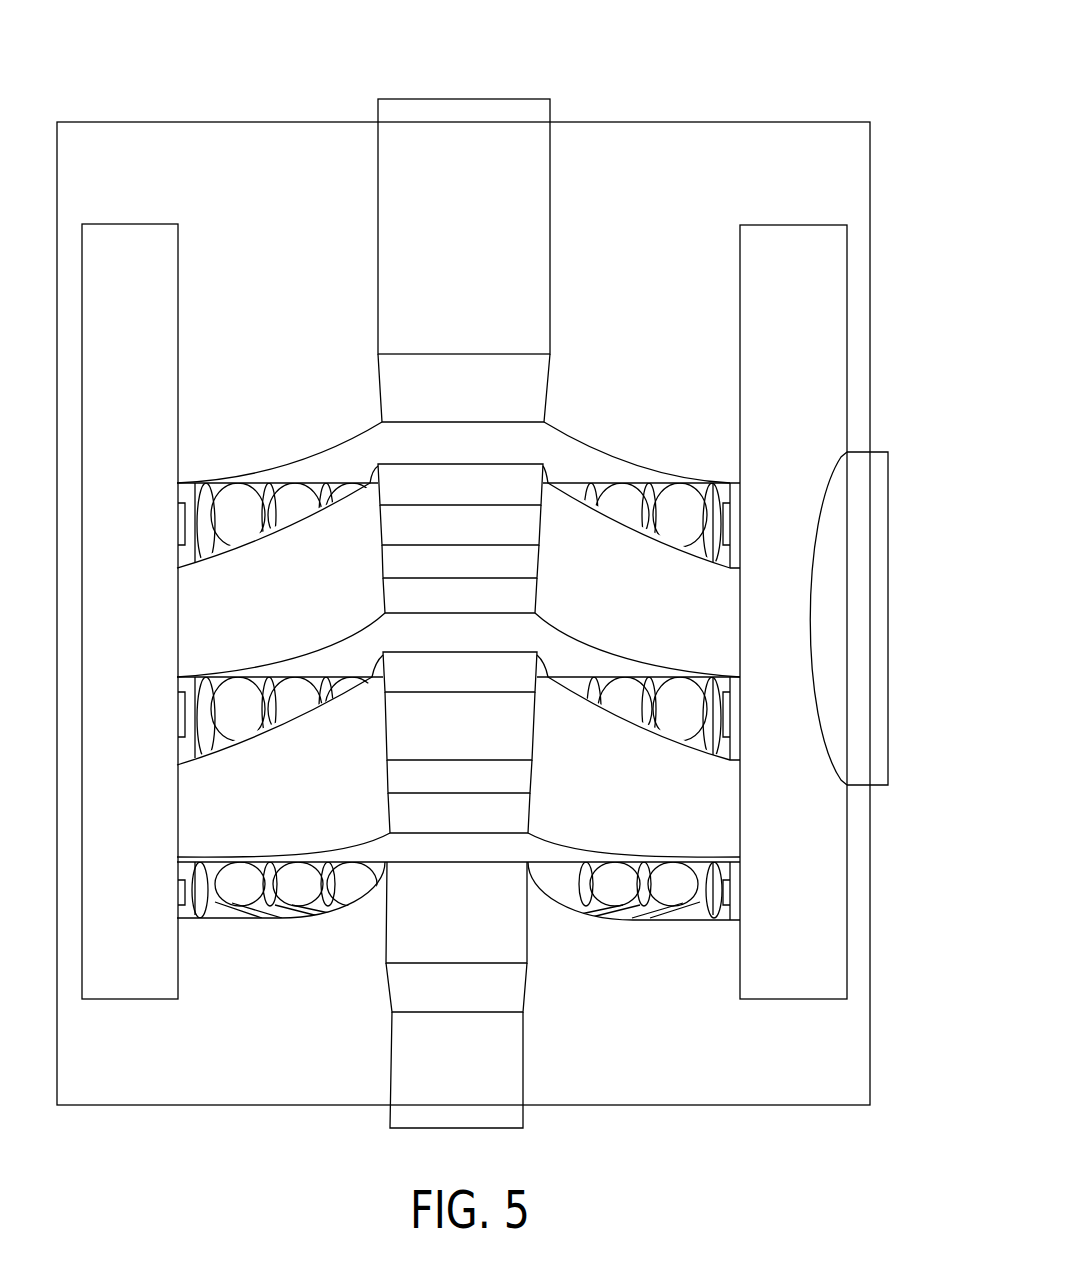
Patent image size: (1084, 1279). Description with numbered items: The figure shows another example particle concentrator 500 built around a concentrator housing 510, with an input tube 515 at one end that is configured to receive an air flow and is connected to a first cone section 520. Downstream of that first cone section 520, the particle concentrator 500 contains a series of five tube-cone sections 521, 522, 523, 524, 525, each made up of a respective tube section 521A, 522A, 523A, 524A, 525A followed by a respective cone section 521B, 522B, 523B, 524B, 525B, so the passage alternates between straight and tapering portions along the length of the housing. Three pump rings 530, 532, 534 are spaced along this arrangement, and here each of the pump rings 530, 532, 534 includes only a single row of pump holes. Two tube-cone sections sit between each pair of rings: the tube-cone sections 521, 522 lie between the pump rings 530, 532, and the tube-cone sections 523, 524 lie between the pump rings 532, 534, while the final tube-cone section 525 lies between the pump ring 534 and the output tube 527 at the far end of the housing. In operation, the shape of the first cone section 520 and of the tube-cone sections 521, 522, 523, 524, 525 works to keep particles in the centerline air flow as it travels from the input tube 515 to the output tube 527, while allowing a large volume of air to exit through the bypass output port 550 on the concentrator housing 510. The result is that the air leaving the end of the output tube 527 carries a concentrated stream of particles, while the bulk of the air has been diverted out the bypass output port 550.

The particle concentrator 500 is at (244, 70).
The concentrator housing 510 is at (340, 121).
The input tube 515 is at (538, 197).
The first cone section 520 is at (538, 383).
The tube-cone section 521 is at (378, 465).
The tube section 521A is at (533, 497).
The cone section 521B is at (534, 537).
The tube-cone section 522 is at (378, 548).
The tube section 522A is at (535, 562).
The cone section 522B is at (536, 597).
The tube-cone section 523 is at (378, 653).
The tube section 523A is at (533, 688).
The cone section 523B is at (520, 742).
The tube-cone section 524 is at (378, 761).
The tube section 524A is at (518, 773).
The cone section 524B is at (518, 812).
The tube-cone section 525 is at (380, 863).
The tube section 525A is at (515, 927).
The cone section 525B is at (515, 987).
The output tube 527 is at (515, 1058).
The pump ring 530 is at (223, 557).
The pump ring 532 is at (223, 747).
The pump ring 534 is at (232, 922).
The bypass output port 550 is at (888, 587).